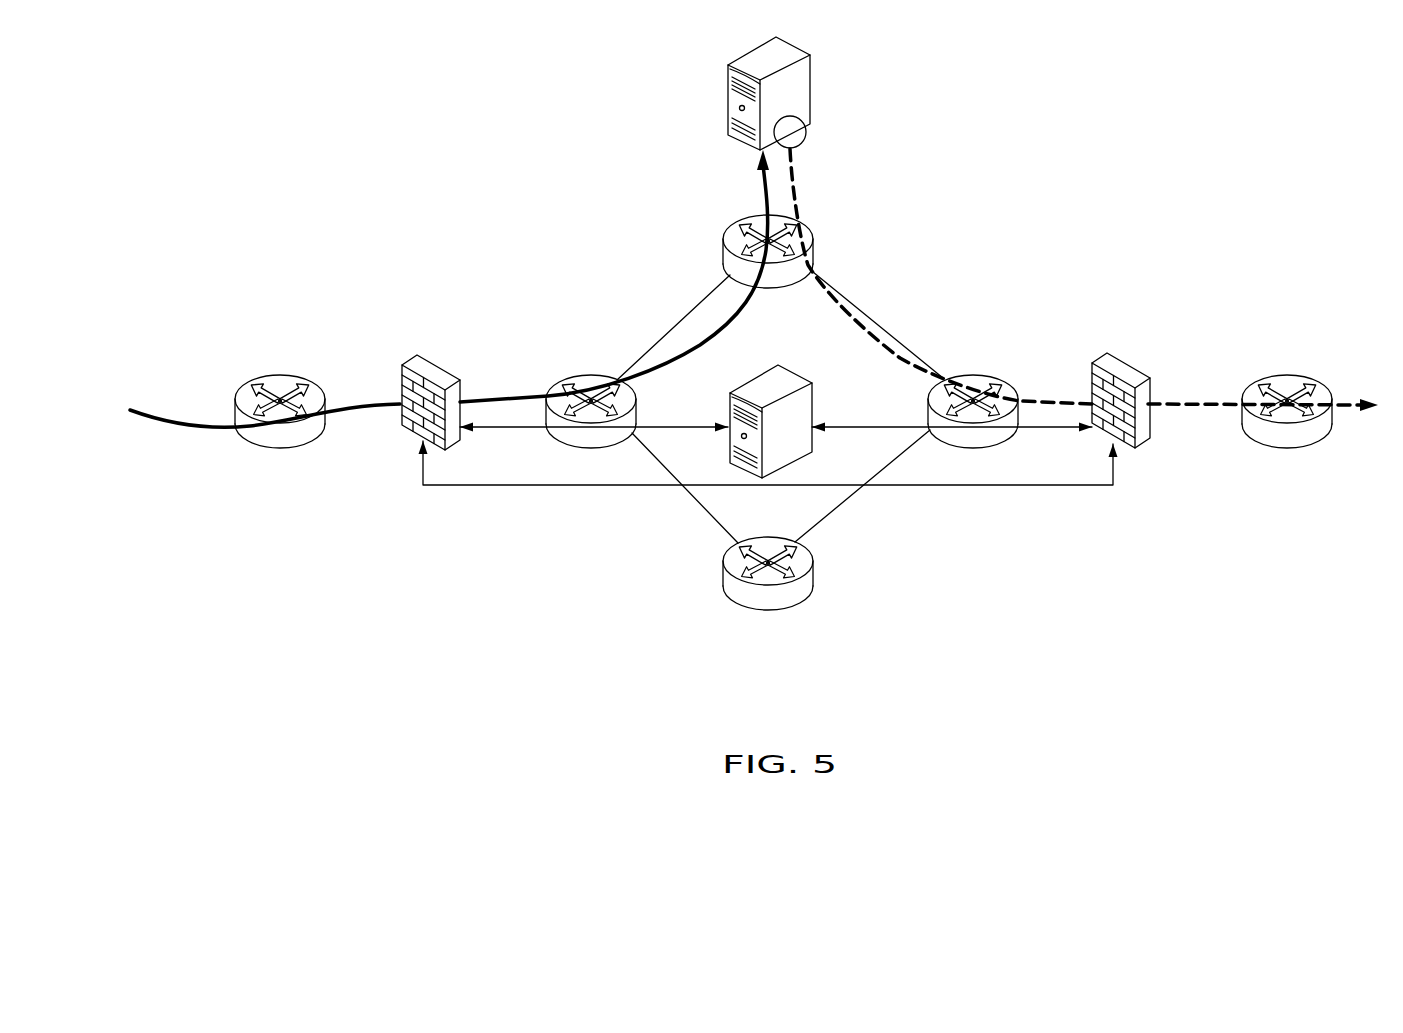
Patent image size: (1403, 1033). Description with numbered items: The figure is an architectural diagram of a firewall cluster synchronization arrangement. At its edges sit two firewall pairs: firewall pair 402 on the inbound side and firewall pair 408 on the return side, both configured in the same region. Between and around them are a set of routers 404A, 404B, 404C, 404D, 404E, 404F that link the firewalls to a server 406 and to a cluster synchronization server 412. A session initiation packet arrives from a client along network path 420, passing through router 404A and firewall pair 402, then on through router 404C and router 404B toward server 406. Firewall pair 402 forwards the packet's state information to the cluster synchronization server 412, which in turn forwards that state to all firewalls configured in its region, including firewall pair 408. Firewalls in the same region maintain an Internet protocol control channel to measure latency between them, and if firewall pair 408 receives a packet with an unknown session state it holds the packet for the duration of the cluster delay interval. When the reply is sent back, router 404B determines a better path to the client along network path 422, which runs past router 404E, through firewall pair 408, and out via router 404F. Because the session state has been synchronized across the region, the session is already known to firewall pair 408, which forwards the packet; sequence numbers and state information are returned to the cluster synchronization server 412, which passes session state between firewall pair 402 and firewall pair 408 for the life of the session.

The firewall pair 402 is at (430, 365).
The router 404A is at (279, 375).
The router 404B is at (722, 255).
The router 404C is at (592, 375).
The router 404D is at (766, 612).
The router 404E is at (972, 375).
The router 404F is at (1287, 375).
The server 406 is at (812, 92).
The firewall pair 408 is at (1122, 363).
The cluster synchronization server 412 is at (786, 366).
The network path 420 is at (170, 418).
The network path 422 is at (1053, 402).